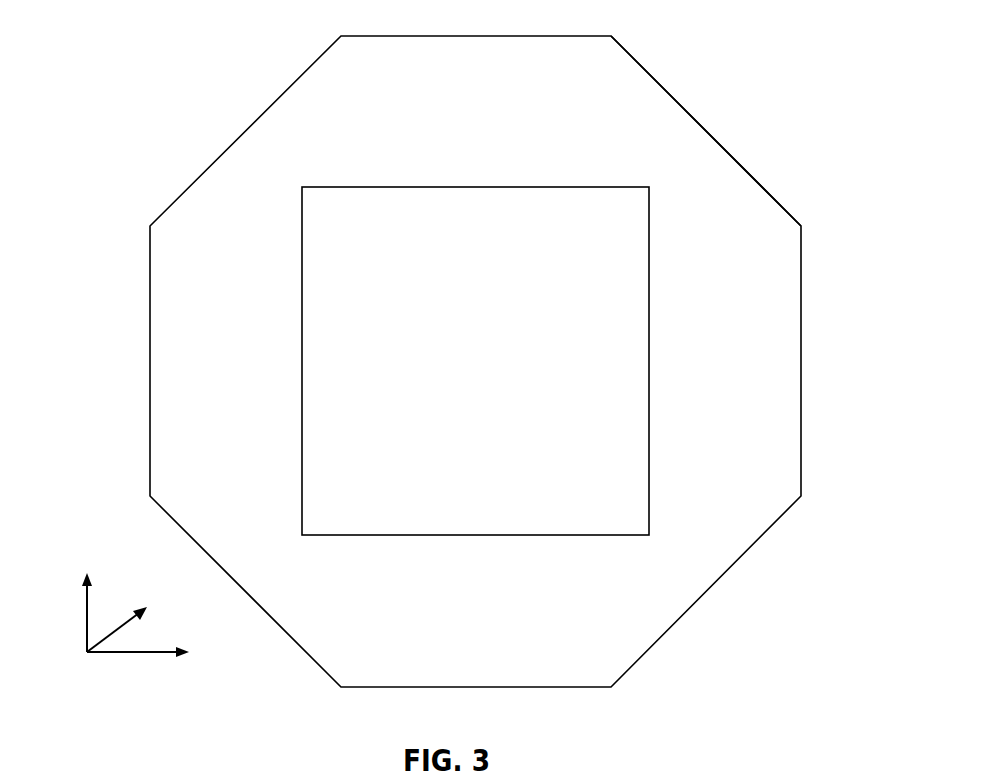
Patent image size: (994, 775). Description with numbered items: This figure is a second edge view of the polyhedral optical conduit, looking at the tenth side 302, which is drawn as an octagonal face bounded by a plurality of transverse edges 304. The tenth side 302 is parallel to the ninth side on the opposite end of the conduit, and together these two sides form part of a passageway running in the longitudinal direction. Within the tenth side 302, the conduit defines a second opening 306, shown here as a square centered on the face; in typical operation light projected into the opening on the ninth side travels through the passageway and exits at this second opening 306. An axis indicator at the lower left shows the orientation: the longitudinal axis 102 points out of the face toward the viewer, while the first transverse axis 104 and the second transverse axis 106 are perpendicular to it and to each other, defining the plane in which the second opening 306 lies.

The tenth side 302 is at (483, 123).
The transverse edges 304 is at (696, 120).
The second opening 306 is at (476, 374).
The longitudinal axis 102 is at (137, 622).
The first transverse axis 104 is at (85, 597).
The second transverse axis 106 is at (167, 652).